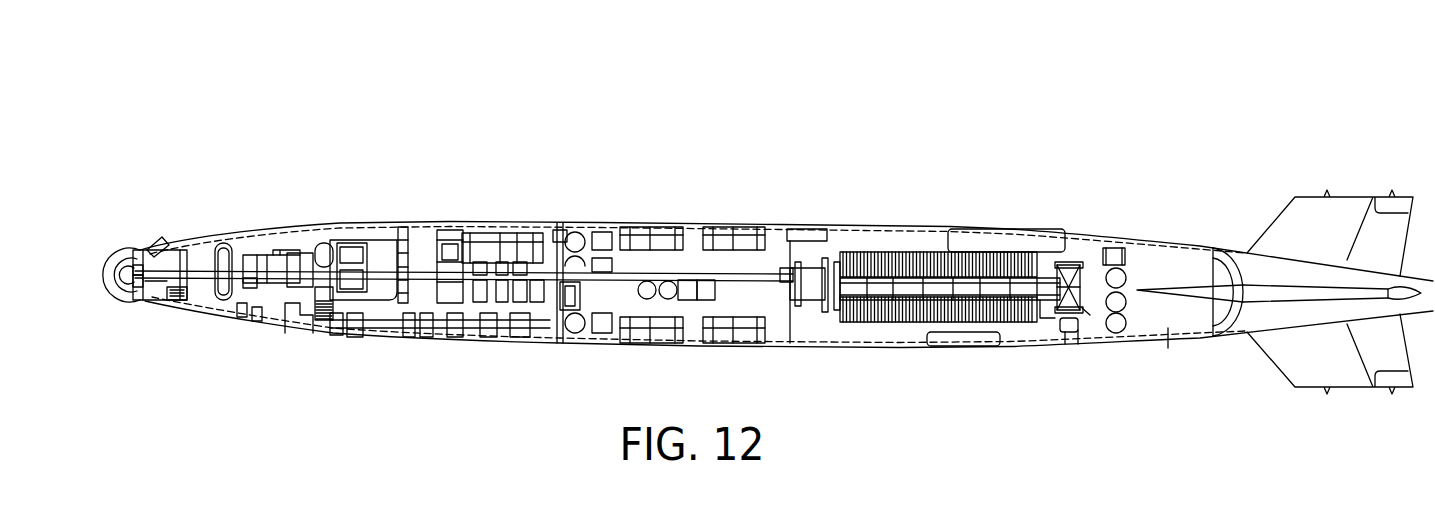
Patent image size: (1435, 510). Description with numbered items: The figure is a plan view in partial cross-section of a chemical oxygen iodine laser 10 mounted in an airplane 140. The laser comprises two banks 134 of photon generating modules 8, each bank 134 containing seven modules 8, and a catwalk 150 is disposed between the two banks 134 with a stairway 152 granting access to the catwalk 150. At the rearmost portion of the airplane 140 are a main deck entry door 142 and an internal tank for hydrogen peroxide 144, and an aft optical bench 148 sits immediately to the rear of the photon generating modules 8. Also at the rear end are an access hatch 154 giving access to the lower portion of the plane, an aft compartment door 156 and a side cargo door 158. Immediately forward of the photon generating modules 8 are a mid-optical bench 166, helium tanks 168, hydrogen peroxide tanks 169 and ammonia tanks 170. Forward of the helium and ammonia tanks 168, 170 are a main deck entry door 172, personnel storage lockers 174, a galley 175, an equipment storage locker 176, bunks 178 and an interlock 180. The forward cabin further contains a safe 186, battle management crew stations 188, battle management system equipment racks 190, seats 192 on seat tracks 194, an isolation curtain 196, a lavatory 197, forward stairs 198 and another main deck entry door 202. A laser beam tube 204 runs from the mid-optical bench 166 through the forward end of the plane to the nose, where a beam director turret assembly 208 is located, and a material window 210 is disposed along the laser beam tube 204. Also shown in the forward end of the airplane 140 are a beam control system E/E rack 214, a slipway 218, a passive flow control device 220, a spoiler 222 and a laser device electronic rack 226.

The photon generating module 8 is at (910, 250).
The chemical laser 10 is at (917, 250).
The bank of photon generating modules 134 is at (855, 252).
The airplane 140 is at (258, 230).
The main deck entry door 142 is at (1172, 350).
The internal tank for hydrogen peroxide 144 is at (1117, 247).
The aft optical bench 148 is at (1079, 314).
The catwalk 150 is at (1013, 292).
The stairway 152 is at (1057, 318).
The access hatch 154 is at (1066, 334).
The aft compartment door 156 is at (1000, 250).
The side cargo door 158 is at (927, 334).
The mid-optical bench 166 is at (809, 250).
The helium tanks 168 is at (667, 243).
The hydrogen peroxide tanks 169 is at (645, 280).
The ammonia tanks 170 is at (603, 242).
The main deck entry door 172 is at (477, 250).
The personnel storage lockers 174 is at (500, 250).
The galley 175 is at (517, 250).
The equipment storage locker 176 is at (533, 250).
The bunks 178 is at (551, 245).
The interlock 180 is at (597, 320).
The safe 186 is at (423, 245).
The battle management crew stations 188 is at (438, 245).
The battle management system equipment racks 190 is at (490, 332).
The seats 192 is at (442, 340).
The seat tracks 194 is at (440, 290).
The isolation curtain 196 is at (373, 320).
The lavatory 197 is at (355, 330).
The forward stairs 198 is at (320, 330).
The main deck entry door 202 is at (308, 318).
The laser beam tube 204 is at (393, 262).
The beam director turret assembly 208 is at (126, 302).
The material window 210 is at (573, 333).
The beam control system E/E rack 214 is at (250, 328).
The slipway 218 is at (160, 270).
The passive flow control device 220 is at (160, 240).
The spoiler 222 is at (180, 278).
The laser device electronic rack 226 is at (523, 334).